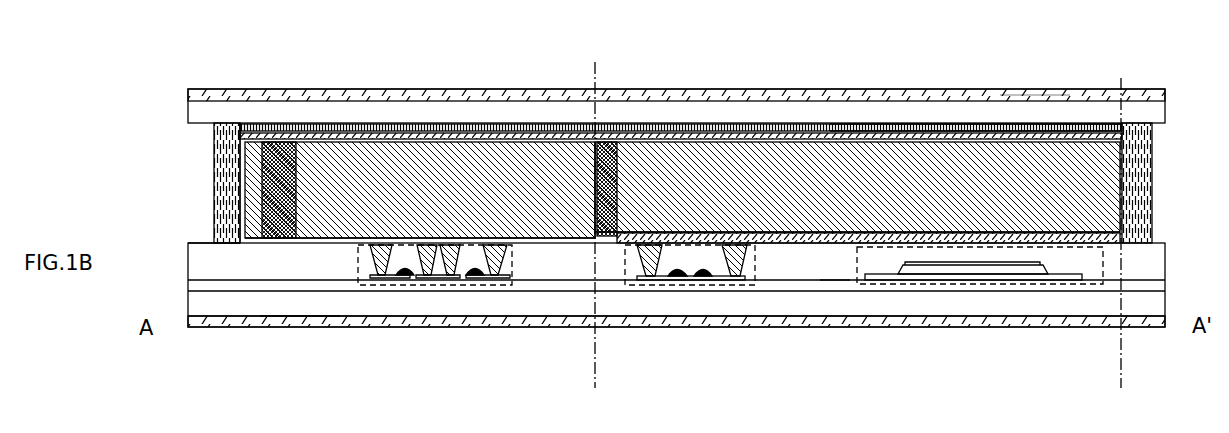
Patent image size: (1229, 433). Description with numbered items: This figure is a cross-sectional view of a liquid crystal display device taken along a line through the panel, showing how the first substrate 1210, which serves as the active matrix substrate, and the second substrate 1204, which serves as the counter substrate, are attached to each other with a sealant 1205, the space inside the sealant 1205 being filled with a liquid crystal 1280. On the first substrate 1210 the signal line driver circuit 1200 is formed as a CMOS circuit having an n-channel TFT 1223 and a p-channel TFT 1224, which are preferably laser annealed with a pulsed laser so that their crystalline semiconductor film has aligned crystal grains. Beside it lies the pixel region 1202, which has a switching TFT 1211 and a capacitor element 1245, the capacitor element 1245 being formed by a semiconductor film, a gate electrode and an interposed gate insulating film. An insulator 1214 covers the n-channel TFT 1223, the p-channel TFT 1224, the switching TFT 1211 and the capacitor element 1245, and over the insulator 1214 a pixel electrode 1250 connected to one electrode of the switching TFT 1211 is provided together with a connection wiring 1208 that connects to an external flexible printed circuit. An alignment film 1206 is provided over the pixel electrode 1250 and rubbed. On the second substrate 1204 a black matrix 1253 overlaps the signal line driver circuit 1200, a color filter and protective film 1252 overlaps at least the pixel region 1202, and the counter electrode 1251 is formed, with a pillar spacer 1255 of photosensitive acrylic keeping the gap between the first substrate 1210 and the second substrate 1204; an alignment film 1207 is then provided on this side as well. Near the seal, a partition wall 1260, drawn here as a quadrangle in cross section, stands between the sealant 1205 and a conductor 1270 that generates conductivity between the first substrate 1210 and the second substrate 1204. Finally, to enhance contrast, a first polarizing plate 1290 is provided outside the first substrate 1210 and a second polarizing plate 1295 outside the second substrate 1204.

The signal line driver circuit 1200 is at (435, 331).
The pixel region 1202 is at (862, 339).
The second substrate 1204 is at (482, 115).
The sealant 1205 is at (222, 196).
The alignment film 1206 is at (792, 245).
The alignment film 1207 is at (678, 124).
The connection wiring 1208 is at (267, 247).
The first substrate 1210 is at (1155, 307).
The switching TFT 1211 is at (693, 283).
The insulator 1214 is at (547, 255).
The n-channel TFT 1223 is at (397, 283).
The p-channel TFT 1224 is at (447, 285).
The capacitor element 1245 is at (980, 307).
The pixel electrode 1250 is at (832, 248).
The counter electrode 1251 is at (965, 127).
The color filter and protective film 1252 is at (875, 127).
The black matrix 1253 is at (355, 133).
The pillar spacer 1255 is at (593, 127).
The partition wall 1260 is at (236, 128).
The conductor 1270 is at (288, 122).
The liquid crystal 1280 is at (377, 124).
The first polarizing plate 1290 is at (300, 320).
The second polarizing plate 1295 is at (1028, 100).